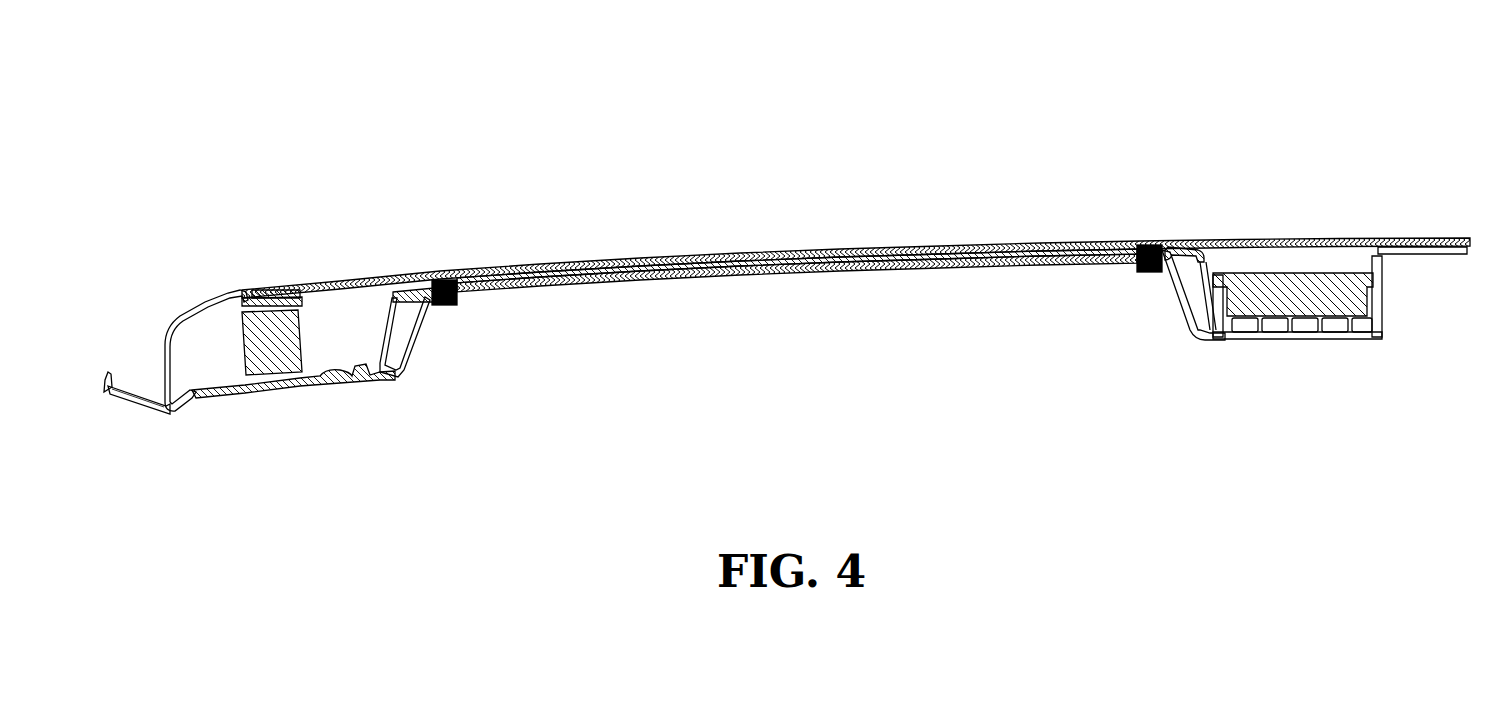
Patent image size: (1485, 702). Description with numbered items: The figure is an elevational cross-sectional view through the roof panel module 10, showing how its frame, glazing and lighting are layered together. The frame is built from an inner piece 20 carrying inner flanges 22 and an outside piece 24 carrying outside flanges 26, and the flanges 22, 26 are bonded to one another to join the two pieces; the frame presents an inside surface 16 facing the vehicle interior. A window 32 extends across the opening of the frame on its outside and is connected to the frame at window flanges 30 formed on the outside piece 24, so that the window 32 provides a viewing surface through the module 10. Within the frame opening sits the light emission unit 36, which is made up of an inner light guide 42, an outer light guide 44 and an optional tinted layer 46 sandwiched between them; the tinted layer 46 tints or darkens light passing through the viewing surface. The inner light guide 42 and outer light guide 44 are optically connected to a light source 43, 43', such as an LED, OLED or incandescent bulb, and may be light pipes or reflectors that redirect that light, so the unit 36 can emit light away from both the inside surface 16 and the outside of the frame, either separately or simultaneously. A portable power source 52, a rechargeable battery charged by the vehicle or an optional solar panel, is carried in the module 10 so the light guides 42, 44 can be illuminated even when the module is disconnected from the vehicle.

The roof panel module 10 is at (1097, 88).
The inside surface 16 is at (1299, 343).
The inner piece 20 is at (186, 398).
The inner flange 22 is at (140, 412).
The outside piece 24 is at (178, 315).
The outside flange 26 is at (137, 392).
The window flange 30 is at (275, 293).
The window 32 is at (1140, 238).
The light emission unit 36 is at (1122, 284).
The inner light guide 42 is at (600, 292).
The light source 43 is at (454, 348).
The light source 43' is at (1163, 315).
The outer light guide 44 is at (595, 262).
The tinted layer 46 is at (528, 300).
The portable power source 52 is at (1302, 295).